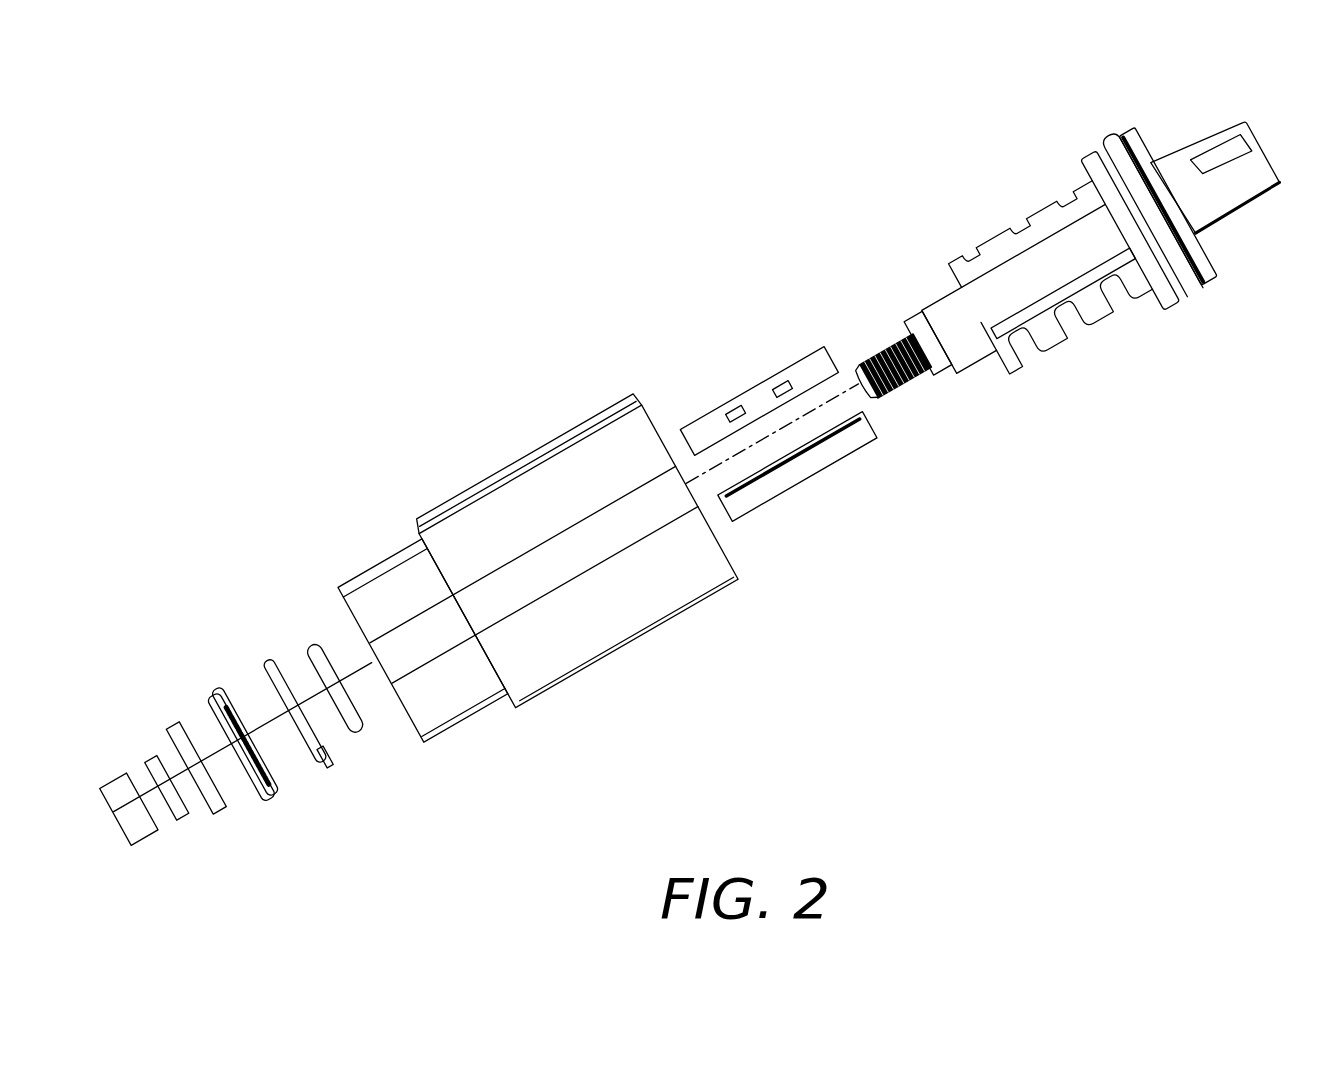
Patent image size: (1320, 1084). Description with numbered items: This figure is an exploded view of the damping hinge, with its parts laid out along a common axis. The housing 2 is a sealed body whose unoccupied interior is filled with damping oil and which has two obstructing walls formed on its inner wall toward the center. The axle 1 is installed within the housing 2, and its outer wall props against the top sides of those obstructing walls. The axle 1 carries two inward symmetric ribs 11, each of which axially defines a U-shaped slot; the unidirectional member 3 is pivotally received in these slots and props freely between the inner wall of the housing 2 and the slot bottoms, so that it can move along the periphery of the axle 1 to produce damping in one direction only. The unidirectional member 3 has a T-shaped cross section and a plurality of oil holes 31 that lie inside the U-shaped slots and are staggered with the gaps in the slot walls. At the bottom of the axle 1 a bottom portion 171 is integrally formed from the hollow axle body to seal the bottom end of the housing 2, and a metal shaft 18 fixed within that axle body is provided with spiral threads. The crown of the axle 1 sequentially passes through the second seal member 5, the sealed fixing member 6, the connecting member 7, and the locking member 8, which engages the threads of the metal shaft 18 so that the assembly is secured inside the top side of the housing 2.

The axle 1 is at (1027, 177).
The ribs 11 is at (998, 252).
The bottom portion 171 is at (1133, 147).
The metal shaft 18 is at (888, 347).
The housing 2 is at (492, 428).
The unidirectional member 3 is at (763, 400).
The oil holes 31 is at (780, 386).
The second seal member 5 is at (312, 650).
The sealed fixing member 6 is at (268, 663).
The connecting member 7 is at (175, 723).
The locking member 8 is at (148, 840).